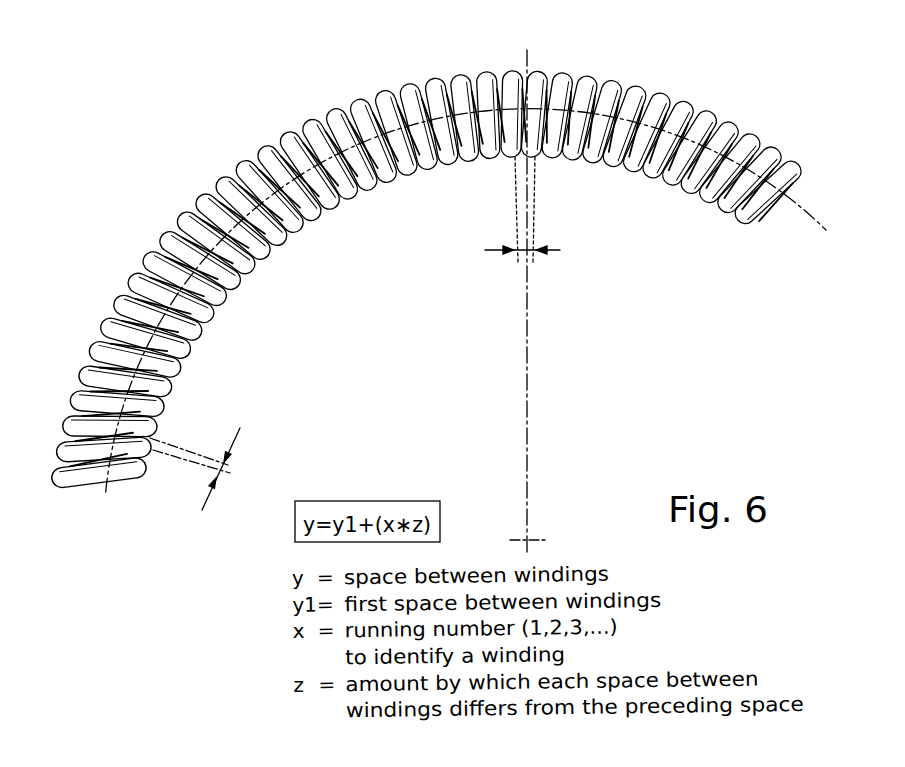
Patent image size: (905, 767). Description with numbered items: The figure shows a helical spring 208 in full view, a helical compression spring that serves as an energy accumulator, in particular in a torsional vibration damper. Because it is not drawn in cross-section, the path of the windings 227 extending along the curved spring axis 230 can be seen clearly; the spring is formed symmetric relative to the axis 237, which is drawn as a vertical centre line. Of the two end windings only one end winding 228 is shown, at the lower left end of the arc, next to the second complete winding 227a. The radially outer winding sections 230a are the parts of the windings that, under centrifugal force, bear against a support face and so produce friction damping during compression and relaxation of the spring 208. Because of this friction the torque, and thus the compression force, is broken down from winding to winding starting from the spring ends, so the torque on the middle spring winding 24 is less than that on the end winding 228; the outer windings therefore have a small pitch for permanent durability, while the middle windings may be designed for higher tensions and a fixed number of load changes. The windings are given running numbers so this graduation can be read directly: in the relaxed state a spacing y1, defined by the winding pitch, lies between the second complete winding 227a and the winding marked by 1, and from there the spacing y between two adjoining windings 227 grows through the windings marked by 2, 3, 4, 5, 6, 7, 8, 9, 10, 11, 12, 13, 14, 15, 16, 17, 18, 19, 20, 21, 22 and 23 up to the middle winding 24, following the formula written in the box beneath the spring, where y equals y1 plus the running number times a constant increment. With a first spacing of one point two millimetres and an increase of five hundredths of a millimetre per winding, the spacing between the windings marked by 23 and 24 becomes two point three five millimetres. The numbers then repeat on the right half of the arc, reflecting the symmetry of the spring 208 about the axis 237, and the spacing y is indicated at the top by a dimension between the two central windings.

The helical spring 208 is at (490, 80).
The windings 227 is at (126, 302).
The second complete winding 227a is at (153, 462).
The end winding 228 is at (82, 473).
The spring axis 230 is at (98, 488).
The radially outer winding sections 230a is at (370, 107).
The axis 237 is at (531, 446).
The spacing y is at (518, 256).
The spacing y1 is at (237, 440).
The winding marked by 1 is at (157, 427).
The winding marked by 2 is at (164, 407).
The winding marked by 3 is at (172, 388).
The winding marked by 4 is at (180, 369).
The winding marked by 5 is at (190, 351).
The winding marked by 6 is at (201, 334).
The winding marked by 7 is at (213, 317).
The winding marked by 8 is at (225, 300).
The winding marked by 9 is at (239, 285).
The winding marked by 10 is at (253, 270).
The winding marked by 11 is at (268, 256).
The winding marked by 12 is at (284, 242).
The winding marked by 13 is at (300, 230).
The winding marked by 14 is at (317, 218).
The winding marked by 15 is at (335, 208).
The winding marked by 16 is at (353, 198).
The winding marked by 17 is at (371, 189).
The winding marked by 18 is at (391, 181).
The winding marked by 19 is at (410, 175).
The winding marked by 20 is at (430, 169).
The winding marked by 21 is at (450, 165).
The winding marked by 22 is at (470, 161).
The winding marked by 23 is at (490, 159).
The middle spring winding 24 is at (511, 157).